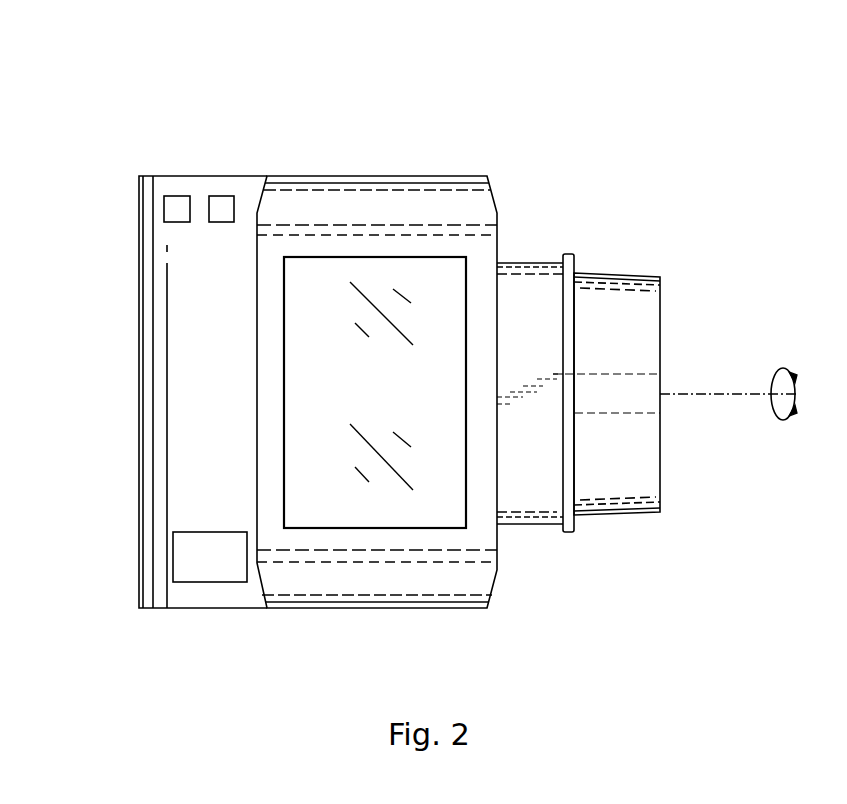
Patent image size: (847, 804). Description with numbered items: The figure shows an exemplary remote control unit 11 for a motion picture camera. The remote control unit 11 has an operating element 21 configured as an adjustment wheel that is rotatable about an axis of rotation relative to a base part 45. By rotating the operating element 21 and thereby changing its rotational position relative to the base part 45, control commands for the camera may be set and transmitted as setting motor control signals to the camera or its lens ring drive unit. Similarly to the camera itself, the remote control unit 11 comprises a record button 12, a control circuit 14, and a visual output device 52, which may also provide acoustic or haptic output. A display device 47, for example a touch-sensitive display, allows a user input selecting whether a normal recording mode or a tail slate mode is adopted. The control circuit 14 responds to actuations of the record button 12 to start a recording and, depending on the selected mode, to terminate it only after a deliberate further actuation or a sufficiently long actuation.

The remote control unit 11 is at (72, 92).
The record button 12 is at (223, 202).
The visual output device 52 is at (178, 202).
The control circuit 14 is at (206, 570).
The base part 45 is at (482, 310).
The display device 47 is at (303, 278).
The operating element 21 is at (633, 327).